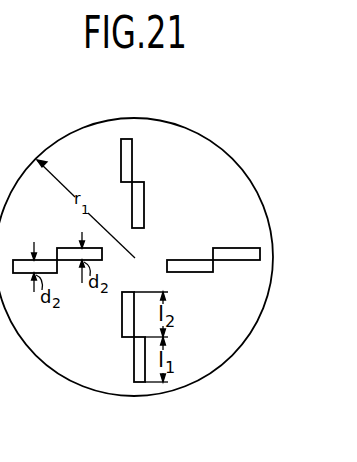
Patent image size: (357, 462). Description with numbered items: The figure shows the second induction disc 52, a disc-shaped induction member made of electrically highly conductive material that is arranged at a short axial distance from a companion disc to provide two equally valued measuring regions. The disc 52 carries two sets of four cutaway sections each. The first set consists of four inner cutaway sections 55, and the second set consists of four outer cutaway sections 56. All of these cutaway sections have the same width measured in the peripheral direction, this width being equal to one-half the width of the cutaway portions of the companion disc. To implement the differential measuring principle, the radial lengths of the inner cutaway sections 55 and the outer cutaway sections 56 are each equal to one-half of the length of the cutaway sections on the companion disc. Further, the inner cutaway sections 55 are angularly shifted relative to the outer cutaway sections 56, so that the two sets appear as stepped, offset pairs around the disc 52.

The second induction disc 52 is at (202, 150).
The inner cutaway sections 55 is at (138, 212).
The outer cutaway sections 56 is at (128, 165).